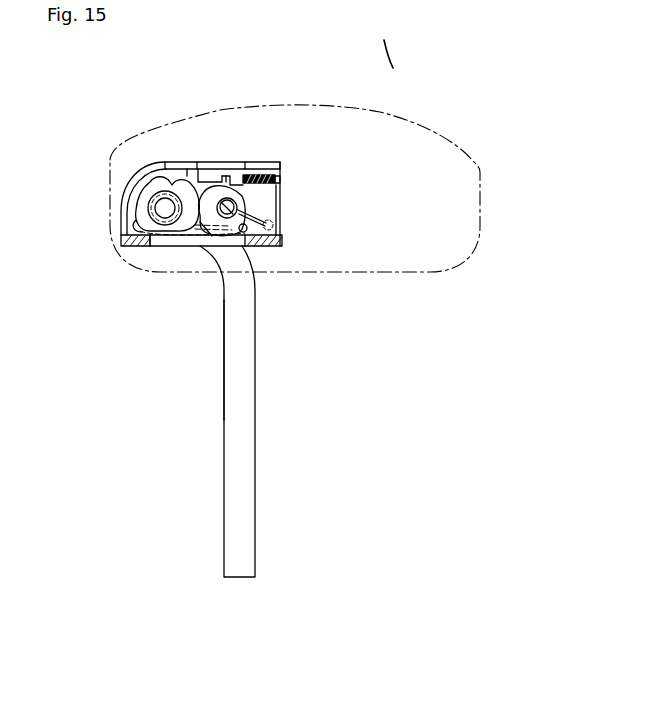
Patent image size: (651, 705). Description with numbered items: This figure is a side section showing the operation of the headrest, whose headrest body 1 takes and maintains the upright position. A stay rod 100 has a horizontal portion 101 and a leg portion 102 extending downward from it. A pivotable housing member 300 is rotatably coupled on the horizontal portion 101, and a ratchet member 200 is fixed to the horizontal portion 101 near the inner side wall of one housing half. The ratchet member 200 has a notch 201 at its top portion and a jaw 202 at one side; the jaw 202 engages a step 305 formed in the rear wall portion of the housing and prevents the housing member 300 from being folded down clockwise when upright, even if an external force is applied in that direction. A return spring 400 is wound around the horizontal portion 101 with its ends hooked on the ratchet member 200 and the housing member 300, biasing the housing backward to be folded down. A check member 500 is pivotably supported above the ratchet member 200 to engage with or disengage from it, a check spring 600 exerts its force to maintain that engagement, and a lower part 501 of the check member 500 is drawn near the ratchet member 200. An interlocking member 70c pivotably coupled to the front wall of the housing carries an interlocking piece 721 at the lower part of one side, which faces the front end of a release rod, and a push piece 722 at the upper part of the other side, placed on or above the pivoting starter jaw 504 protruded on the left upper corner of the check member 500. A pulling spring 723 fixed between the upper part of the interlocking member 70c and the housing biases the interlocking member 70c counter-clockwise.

The headrest body 1 is at (425, 132).
The stay rod 100 is at (256, 500).
The leg portion 102 is at (231, 412).
The ratchet member 200 is at (167, 236).
The notch 201 is at (146, 184).
The jaw 202 is at (190, 240).
The pivotable housing member 300 is at (138, 162).
The step 305 is at (152, 248).
The return spring 400 is at (151, 190).
The horizontal portion 101 is at (146, 205).
The check member 500 is at (249, 197).
The lever arm 501 is at (195, 233).
The pivoting starter jaw 504 is at (200, 177).
The check spring 600 is at (258, 249).
The interlocking member 70c is at (258, 175).
The interlocking piece 721 is at (180, 194).
The push piece 722 is at (228, 175).
The pulling spring 723 is at (279, 175).